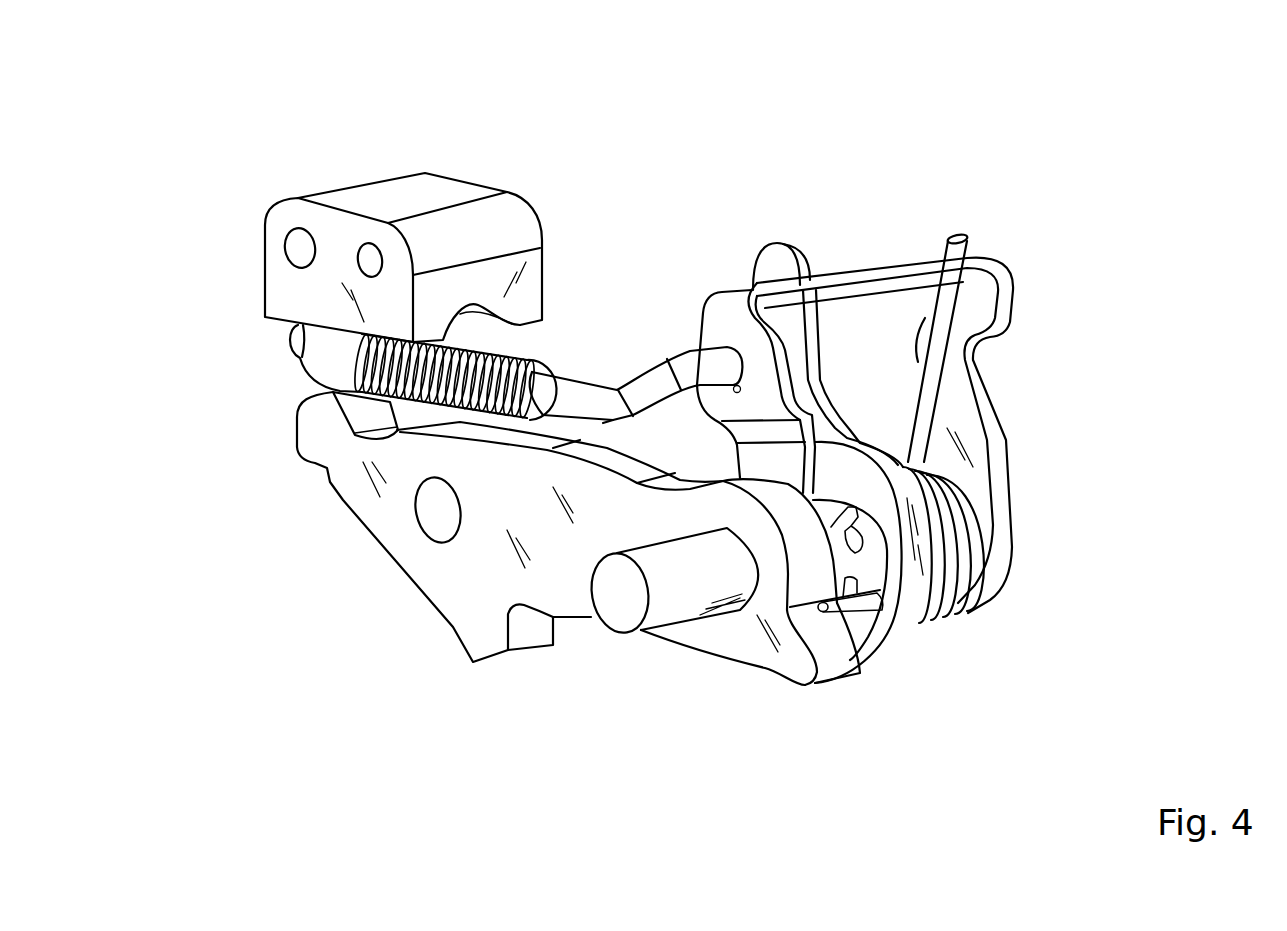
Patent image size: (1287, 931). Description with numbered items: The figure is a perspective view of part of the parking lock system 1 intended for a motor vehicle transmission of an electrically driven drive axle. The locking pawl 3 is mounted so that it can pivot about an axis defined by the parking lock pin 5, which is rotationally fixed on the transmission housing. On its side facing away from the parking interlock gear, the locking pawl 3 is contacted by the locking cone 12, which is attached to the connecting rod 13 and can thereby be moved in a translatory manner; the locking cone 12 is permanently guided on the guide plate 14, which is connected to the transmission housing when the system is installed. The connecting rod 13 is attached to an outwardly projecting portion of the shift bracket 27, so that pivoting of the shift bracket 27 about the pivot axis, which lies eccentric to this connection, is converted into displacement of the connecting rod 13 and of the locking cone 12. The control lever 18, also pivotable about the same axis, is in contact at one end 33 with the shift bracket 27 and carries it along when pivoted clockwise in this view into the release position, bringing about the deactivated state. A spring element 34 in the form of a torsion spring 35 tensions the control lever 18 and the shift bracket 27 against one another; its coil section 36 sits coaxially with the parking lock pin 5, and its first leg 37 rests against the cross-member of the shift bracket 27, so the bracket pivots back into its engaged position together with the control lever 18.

The parking lock system 1 is at (275, 149).
The locking pawl 3 is at (485, 588).
The parking lock pin 5 is at (620, 590).
The locking cone 12 is at (330, 355).
The connecting rod 13 is at (653, 385).
The guide plate 14 is at (388, 200).
The control lever 18 is at (787, 323).
The shift bracket 27 is at (727, 300).
The end 33 is at (775, 267).
The spring element 34 is at (1023, 632).
The torsion spring 35 is at (970, 520).
The coil section 36 is at (947, 582).
The first leg 37 is at (947, 303).